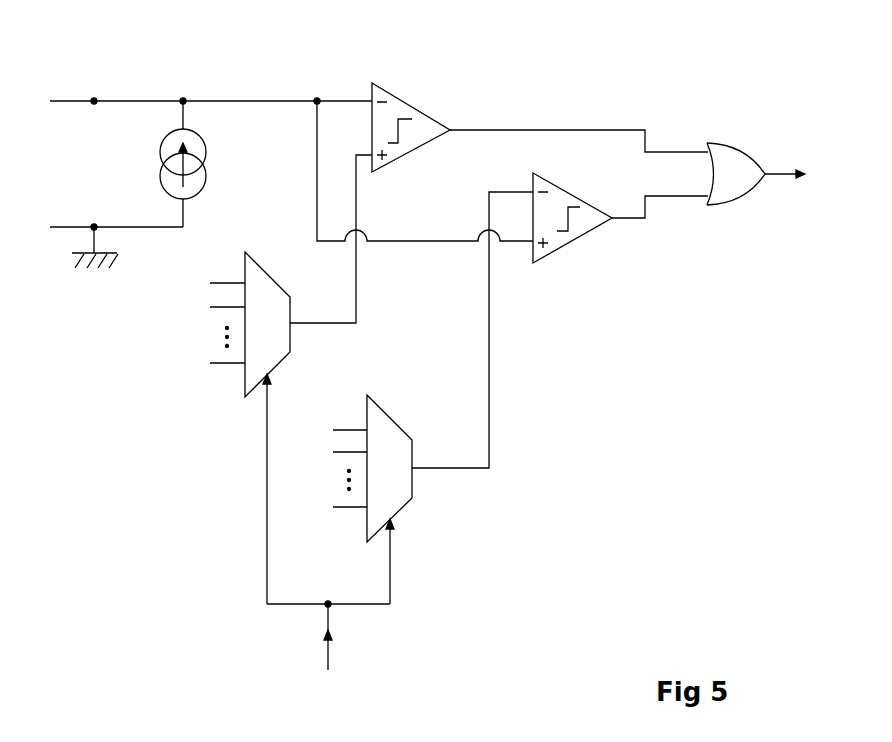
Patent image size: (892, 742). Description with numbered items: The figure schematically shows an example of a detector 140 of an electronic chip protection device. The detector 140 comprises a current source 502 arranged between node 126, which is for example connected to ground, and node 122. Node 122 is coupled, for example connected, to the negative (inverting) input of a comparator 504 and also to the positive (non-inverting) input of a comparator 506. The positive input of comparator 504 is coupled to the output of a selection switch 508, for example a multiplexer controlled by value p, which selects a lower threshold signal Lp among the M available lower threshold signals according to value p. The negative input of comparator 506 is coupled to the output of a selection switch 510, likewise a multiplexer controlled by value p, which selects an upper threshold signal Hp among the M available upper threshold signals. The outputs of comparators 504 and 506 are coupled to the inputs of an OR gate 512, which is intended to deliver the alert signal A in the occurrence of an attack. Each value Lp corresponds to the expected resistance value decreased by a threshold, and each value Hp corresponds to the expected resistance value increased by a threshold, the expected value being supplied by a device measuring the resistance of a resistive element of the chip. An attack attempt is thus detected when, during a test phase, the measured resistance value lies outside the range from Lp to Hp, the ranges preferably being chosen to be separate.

The node 122 is at (94, 100).
The node 126 is at (94, 226).
The current source 502 is at (207, 180).
The comparator 504 is at (408, 104).
The comparator 506 is at (566, 191).
The selection switch 508 is at (277, 293).
The selection switch 510 is at (393, 434).
The OR gate 512 is at (737, 146).
The detector 140 is at (630, 330).